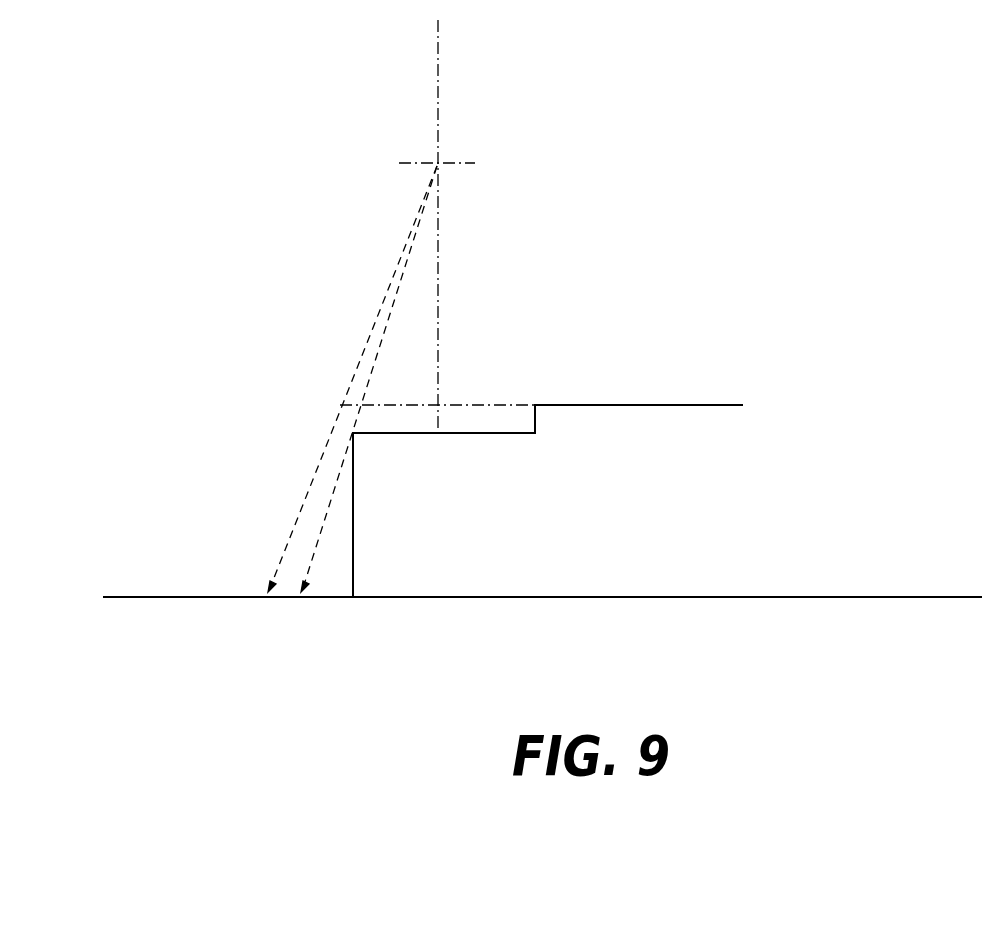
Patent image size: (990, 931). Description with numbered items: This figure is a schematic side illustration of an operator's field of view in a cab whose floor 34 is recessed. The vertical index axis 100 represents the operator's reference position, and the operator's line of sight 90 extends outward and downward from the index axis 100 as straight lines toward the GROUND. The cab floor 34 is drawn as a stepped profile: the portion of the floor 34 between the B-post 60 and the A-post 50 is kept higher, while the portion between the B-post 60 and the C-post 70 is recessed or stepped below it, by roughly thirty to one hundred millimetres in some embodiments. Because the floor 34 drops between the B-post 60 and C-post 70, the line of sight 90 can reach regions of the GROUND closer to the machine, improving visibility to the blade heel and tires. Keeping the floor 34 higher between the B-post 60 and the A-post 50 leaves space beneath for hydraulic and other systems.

The floor 34 is at (605, 349).
The A-post 50 is at (739, 419).
The B-post 60 is at (536, 443).
The C-post 70 is at (356, 446).
The line of sight 90 is at (368, 381).
The index axis 100 is at (438, 108).
The ground GROUND is at (748, 600).